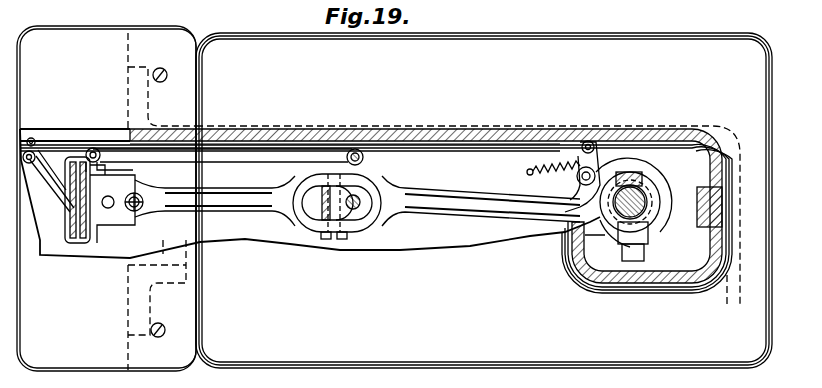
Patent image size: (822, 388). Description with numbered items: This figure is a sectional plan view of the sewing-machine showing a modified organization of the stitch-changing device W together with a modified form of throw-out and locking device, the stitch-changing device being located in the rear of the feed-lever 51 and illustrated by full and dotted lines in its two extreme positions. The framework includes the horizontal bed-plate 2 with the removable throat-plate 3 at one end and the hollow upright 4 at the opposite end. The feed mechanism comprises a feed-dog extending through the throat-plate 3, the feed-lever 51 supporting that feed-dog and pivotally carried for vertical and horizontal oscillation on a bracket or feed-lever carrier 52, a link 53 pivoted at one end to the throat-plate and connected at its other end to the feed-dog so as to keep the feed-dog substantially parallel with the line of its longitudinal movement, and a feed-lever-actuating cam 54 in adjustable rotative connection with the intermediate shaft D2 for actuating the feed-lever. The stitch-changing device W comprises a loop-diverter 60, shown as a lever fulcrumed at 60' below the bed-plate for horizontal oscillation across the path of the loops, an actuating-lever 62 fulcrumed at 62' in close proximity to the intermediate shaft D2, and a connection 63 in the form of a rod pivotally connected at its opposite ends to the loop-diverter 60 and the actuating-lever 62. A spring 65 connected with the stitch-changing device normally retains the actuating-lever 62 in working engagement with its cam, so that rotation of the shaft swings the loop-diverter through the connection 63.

The bed-plate 2 is at (484, 200).
The throat-plate 3 is at (106, 198).
The hollow upright 4 is at (591, 277).
The feed-lever 51 is at (357, 206).
The feed-lever carrier 52 is at (354, 208).
The link 53 is at (222, 156).
The feed-lever-actuating cam 54 is at (640, 196).
The loop-diverter 60 is at (86, 196).
The fulcrum of loop-diverter 60' is at (50, 137).
The actuating-lever 62 is at (569, 177).
The fulcrum of actuating-lever 62' is at (604, 156).
The connection 63 is at (444, 143).
The spring 65 is at (542, 170).
The intermediate shaft D2 is at (631, 209).
The stitch-changing device W is at (42, 151).